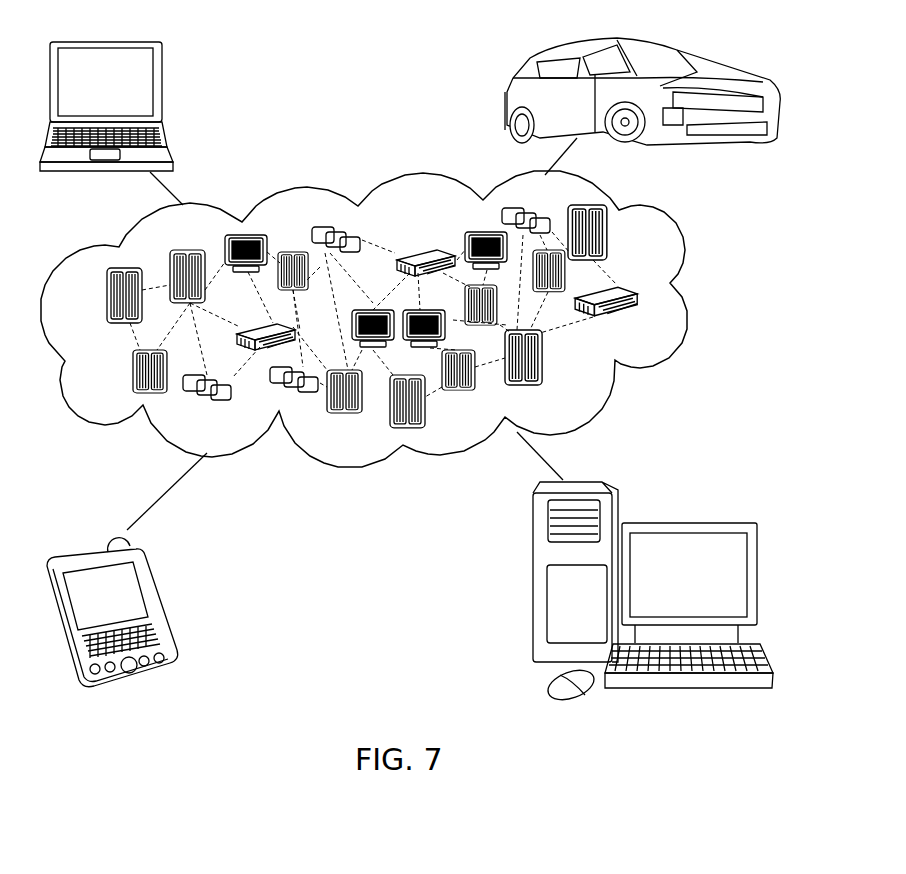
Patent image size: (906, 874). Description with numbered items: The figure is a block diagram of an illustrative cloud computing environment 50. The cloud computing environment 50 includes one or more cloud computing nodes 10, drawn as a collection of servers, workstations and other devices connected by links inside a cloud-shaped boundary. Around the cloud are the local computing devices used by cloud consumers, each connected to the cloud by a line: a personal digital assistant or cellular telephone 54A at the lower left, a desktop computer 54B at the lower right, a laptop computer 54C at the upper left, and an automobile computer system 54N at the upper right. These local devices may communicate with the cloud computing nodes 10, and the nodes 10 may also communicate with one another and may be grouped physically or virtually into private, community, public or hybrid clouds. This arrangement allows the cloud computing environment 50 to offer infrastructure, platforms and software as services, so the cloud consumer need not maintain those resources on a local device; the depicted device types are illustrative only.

The laptop computer 54C is at (163, 92).
The automobile computer system 54N is at (507, 97).
The cloud computing environment 50 is at (682, 296).
The cloud computing nodes 10 is at (641, 324).
The personal digital assistant or cellular telephone 54A is at (158, 605).
The desktop computer 54B is at (683, 521).